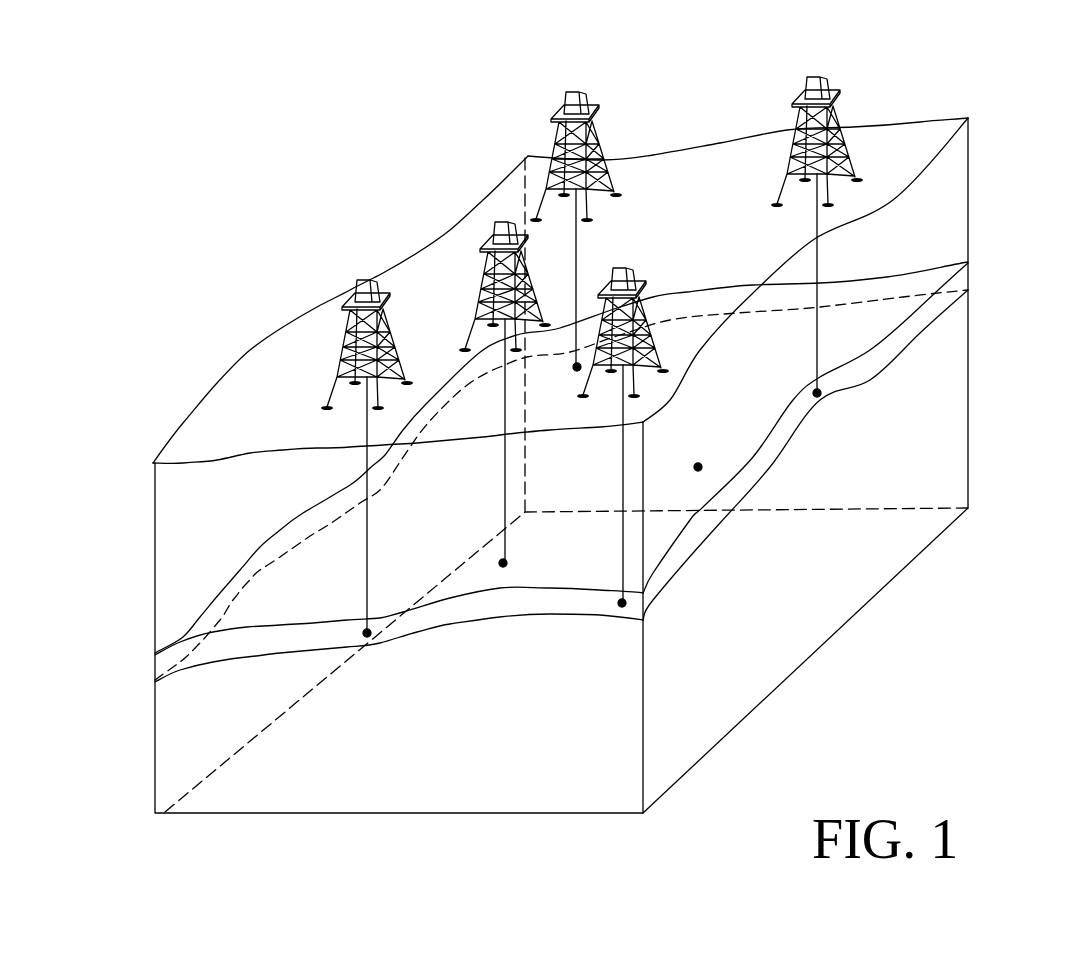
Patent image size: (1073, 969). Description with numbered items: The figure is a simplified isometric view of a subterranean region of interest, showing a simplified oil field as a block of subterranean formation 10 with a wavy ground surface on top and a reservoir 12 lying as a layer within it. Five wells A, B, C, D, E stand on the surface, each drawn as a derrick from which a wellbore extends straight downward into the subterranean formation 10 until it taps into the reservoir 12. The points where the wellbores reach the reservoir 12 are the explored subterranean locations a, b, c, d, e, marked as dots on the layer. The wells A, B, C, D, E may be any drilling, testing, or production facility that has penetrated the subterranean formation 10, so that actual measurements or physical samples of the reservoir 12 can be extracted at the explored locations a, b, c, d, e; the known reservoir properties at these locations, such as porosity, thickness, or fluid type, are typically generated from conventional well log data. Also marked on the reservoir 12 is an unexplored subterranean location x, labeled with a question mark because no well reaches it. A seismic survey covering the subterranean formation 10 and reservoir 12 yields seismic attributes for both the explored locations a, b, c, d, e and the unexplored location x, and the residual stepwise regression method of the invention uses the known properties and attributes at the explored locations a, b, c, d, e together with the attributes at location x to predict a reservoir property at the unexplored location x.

The subterranean formation 10 is at (950, 200).
The reservoir 12 is at (953, 300).
The well A is at (357, 283).
The well B is at (498, 224).
The well C is at (580, 94).
The well D is at (630, 270).
The well E is at (820, 78).
The explored subterranean location a is at (362, 630).
The explored subterranean location b is at (497, 559).
The explored subterranean location c is at (575, 371).
The explored subterranean location d is at (620, 605).
The explored subterranean location e is at (821, 396).
The unexplored subterranean location x is at (700, 467).